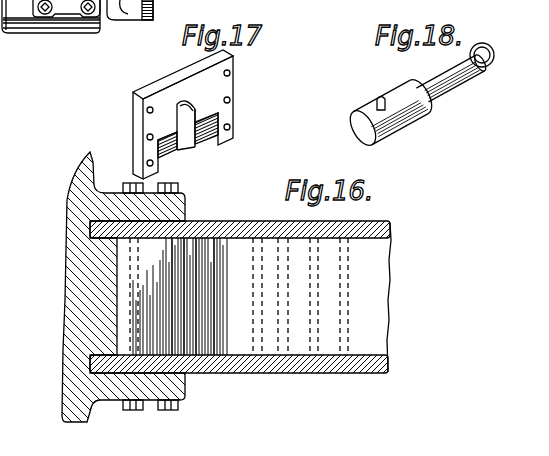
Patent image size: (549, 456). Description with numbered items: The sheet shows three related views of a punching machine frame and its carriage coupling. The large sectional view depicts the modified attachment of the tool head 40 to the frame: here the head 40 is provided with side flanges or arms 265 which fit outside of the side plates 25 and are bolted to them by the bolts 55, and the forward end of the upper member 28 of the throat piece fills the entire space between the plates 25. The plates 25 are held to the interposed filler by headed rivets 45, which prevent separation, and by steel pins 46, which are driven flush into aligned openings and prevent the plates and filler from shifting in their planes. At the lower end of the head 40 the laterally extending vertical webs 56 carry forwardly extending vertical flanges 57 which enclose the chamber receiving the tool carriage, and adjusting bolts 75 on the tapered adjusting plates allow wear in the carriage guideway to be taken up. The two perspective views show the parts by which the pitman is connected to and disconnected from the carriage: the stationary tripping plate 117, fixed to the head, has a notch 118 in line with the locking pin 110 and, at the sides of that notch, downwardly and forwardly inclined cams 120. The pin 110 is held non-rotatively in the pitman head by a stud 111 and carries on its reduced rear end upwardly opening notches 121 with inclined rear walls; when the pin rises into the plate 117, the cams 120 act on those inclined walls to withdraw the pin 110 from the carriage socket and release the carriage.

In FIG. 16, the side plates 25 is at (389, 221).
In FIG. 16, the upper member of the throat piece 28 is at (380, 270).
In FIG. 16, the tool head 40 is at (72, 331).
In FIG. 16, the rivets 45 is at (350, 323).
In FIG. 16, the steel pins 46 is at (270, 376).
In FIG. 16, the bolts 55 is at (157, 406).
In FIG. 16, the side flanges or arms 265 is at (186, 196).
In FIG. 17, the tripping plate 117 is at (236, 67).
In FIG. 17, the notch 118 is at (190, 102).
In FIG. 17, the cams 120 is at (203, 135).
In FIG. 18, the pin 110 is at (400, 123).
In FIG. 18, the stud 111 is at (380, 96).
In FIG. 18, the notches 121 is at (494, 50).
In FIG. 17, the vertical webs 56 is at (122, 10).
In FIG. 17, the vertical flanges 57 is at (68, 15).
In FIG. 17, the adjusting bolts 75 is at (45, 10).